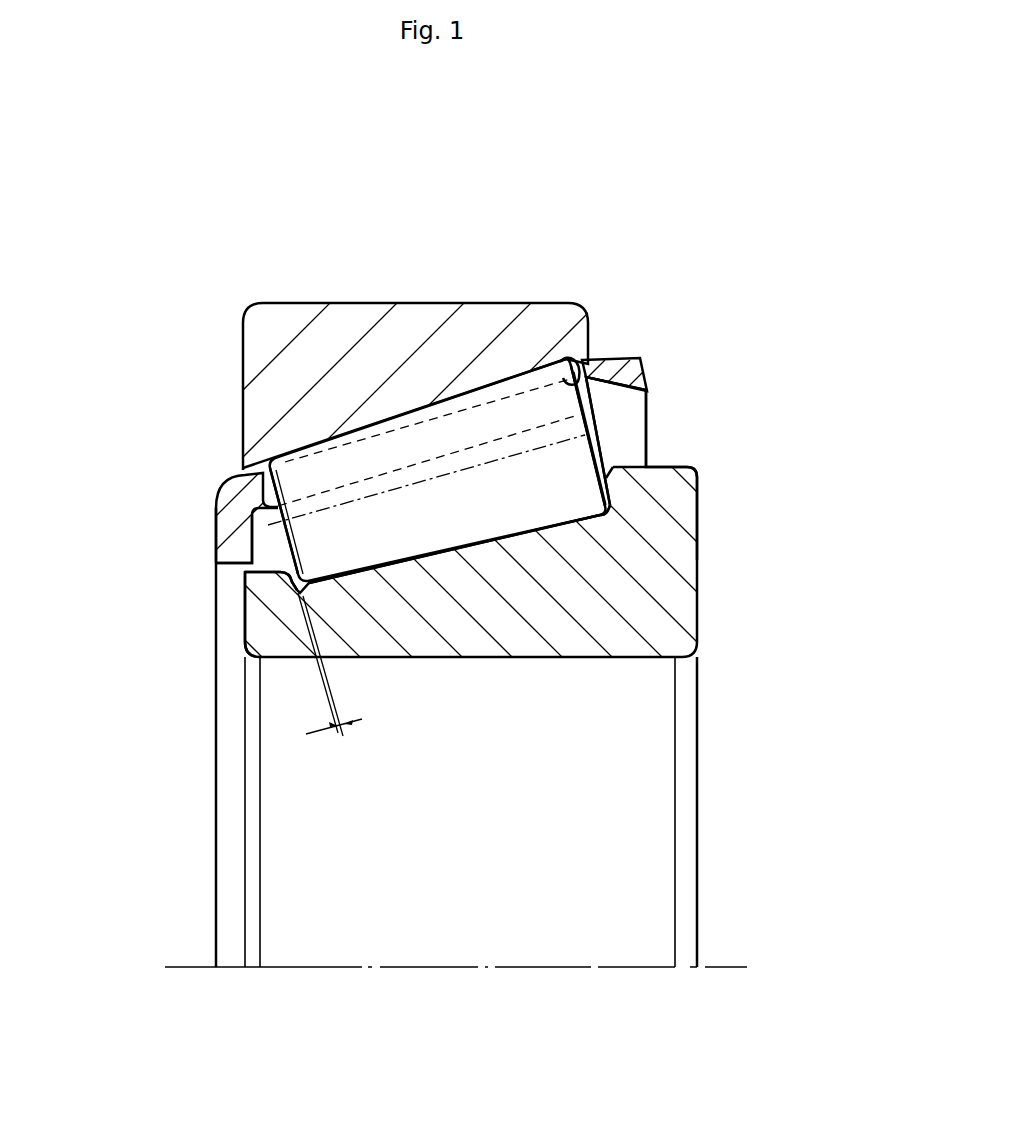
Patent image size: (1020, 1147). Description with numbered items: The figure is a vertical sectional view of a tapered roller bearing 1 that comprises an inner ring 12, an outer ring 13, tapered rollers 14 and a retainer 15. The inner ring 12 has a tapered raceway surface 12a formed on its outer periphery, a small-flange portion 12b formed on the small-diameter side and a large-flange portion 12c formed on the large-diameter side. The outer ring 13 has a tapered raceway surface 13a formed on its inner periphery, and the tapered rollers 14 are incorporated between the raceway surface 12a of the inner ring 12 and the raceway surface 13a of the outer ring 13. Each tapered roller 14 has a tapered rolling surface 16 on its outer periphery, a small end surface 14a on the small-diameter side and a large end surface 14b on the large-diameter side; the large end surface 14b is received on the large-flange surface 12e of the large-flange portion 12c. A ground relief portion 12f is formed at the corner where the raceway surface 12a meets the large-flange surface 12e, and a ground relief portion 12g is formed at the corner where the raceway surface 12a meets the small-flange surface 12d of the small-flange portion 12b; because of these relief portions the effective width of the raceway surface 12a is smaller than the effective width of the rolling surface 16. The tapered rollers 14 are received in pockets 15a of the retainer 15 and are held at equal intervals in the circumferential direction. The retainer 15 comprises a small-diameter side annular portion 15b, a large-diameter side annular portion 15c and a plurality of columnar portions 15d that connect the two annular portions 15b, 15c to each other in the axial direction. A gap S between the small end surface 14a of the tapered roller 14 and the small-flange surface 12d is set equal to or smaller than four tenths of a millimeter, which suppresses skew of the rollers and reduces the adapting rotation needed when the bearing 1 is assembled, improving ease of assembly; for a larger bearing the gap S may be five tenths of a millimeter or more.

The tapered roller bearing 1 is at (628, 212).
The inner ring 12 is at (573, 638).
The raceway surface 12a is at (486, 546).
The small-flange portion 12b is at (270, 592).
The large-flange portion 12c is at (665, 484).
The small-flange surface 12d is at (248, 574).
The large-flange surface 12e is at (610, 429).
The ground relief portion 12f is at (620, 516).
The ground relief portion 12g is at (245, 548).
The outer ring 13 is at (385, 336).
The raceway surface 13a is at (387, 417).
The tapered roller 14 is at (499, 406).
The small end surface 14a is at (275, 527).
The large end surface 14b is at (595, 410).
The retainer 15 is at (439, 404).
The pocket 15a is at (575, 362).
The small-diameter side annular portion 15b is at (240, 490).
The large-diameter side annular portion 15c is at (608, 390).
The columnar portion 15d is at (320, 455).
The rolling surface 16 is at (435, 393).
The gap S is at (330, 680).